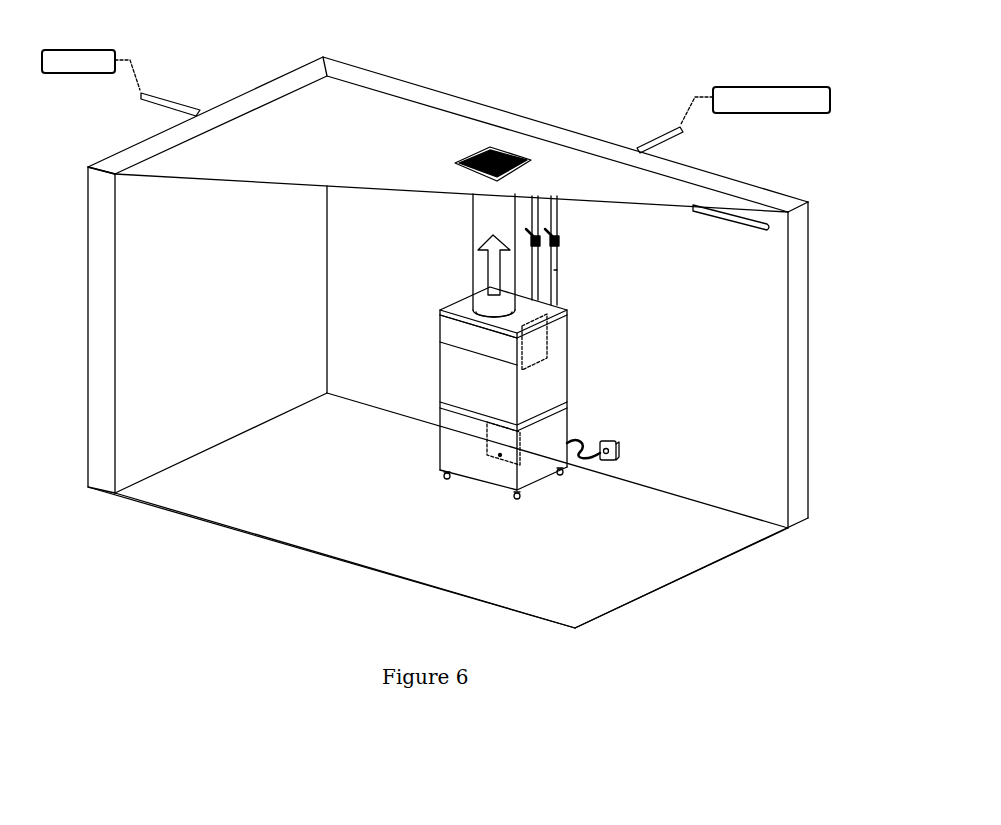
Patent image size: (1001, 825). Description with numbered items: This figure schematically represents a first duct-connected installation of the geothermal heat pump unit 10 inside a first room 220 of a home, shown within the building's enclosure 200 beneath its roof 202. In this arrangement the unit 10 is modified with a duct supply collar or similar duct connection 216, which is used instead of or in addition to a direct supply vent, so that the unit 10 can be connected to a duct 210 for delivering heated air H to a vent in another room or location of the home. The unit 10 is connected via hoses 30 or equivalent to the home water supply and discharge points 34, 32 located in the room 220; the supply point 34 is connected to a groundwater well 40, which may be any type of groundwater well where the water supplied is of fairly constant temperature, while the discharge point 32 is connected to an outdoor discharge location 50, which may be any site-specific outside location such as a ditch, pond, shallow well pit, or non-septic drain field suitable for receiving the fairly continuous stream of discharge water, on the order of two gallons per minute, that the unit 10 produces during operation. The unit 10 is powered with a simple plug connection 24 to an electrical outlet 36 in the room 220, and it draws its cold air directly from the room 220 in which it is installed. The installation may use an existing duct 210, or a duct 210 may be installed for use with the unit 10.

The geothermal heat pump unit 10 is at (438, 468).
The plug connection 24 is at (578, 460).
The hoses 30 is at (556, 270).
The home water discharge point 32 is at (560, 208).
The home water supply point 34 is at (558, 230).
The electrical outlet 36 is at (612, 440).
The groundwater well 40 is at (82, 44).
The outdoor discharge location 50 is at (766, 78).
The structure 200 is at (790, 318).
The roof 202 is at (376, 97).
The duct 210 is at (490, 216).
The duct connection 216 is at (545, 323).
The first room 220 is at (472, 148).
The heated air H is at (485, 237).